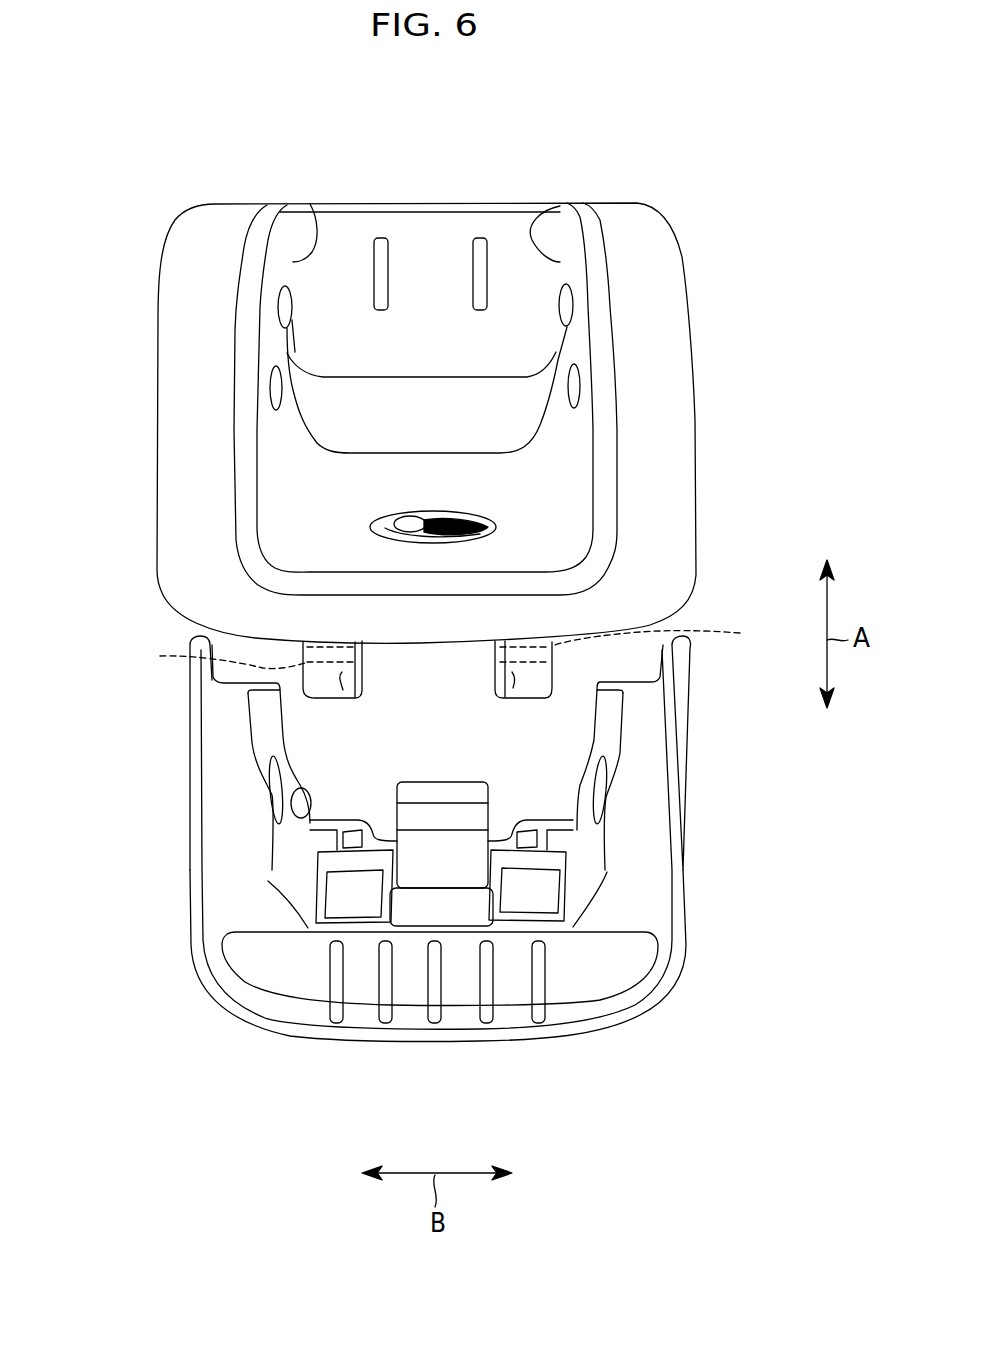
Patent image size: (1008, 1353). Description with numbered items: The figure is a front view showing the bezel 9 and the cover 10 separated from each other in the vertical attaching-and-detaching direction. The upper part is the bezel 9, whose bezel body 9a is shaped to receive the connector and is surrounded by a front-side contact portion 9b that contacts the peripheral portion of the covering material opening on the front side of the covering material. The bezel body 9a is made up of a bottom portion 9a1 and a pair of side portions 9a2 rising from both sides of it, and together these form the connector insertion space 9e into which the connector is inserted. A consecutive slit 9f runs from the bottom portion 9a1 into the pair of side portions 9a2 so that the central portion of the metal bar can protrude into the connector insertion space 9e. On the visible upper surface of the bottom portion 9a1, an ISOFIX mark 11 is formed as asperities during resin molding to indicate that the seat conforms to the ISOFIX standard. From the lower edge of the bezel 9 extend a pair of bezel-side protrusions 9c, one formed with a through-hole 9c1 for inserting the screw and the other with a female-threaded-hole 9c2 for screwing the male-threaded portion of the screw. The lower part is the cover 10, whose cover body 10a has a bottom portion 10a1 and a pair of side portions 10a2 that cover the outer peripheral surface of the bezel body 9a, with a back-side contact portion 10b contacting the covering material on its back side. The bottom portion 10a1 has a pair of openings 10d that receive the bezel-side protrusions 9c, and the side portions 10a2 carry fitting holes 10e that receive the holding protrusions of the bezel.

The bezel 9 is at (439, 427).
The bezel body 9a is at (432, 240).
The bottom portion 9a1 is at (522, 538).
The side portions 9a2 is at (316, 202).
The front-side contact portion 9b is at (640, 293).
The bezel-side protrusions 9c is at (513, 687).
The through-hole 9c1 is at (642, 642).
The female-threaded-hole 9c2 is at (228, 665).
The connector insertion space 9e is at (303, 517).
The slit 9f is at (410, 411).
The cover 10 is at (457, 885).
The cover body 10a is at (573, 884).
The bottom portion 10a1 is at (302, 895).
The side portions 10a2 is at (607, 743).
The back-side contact portion 10b is at (647, 885).
The openings 10d is at (516, 889).
The fitting holes 10e is at (587, 783).
The ISOFIX mark 11 is at (413, 500).